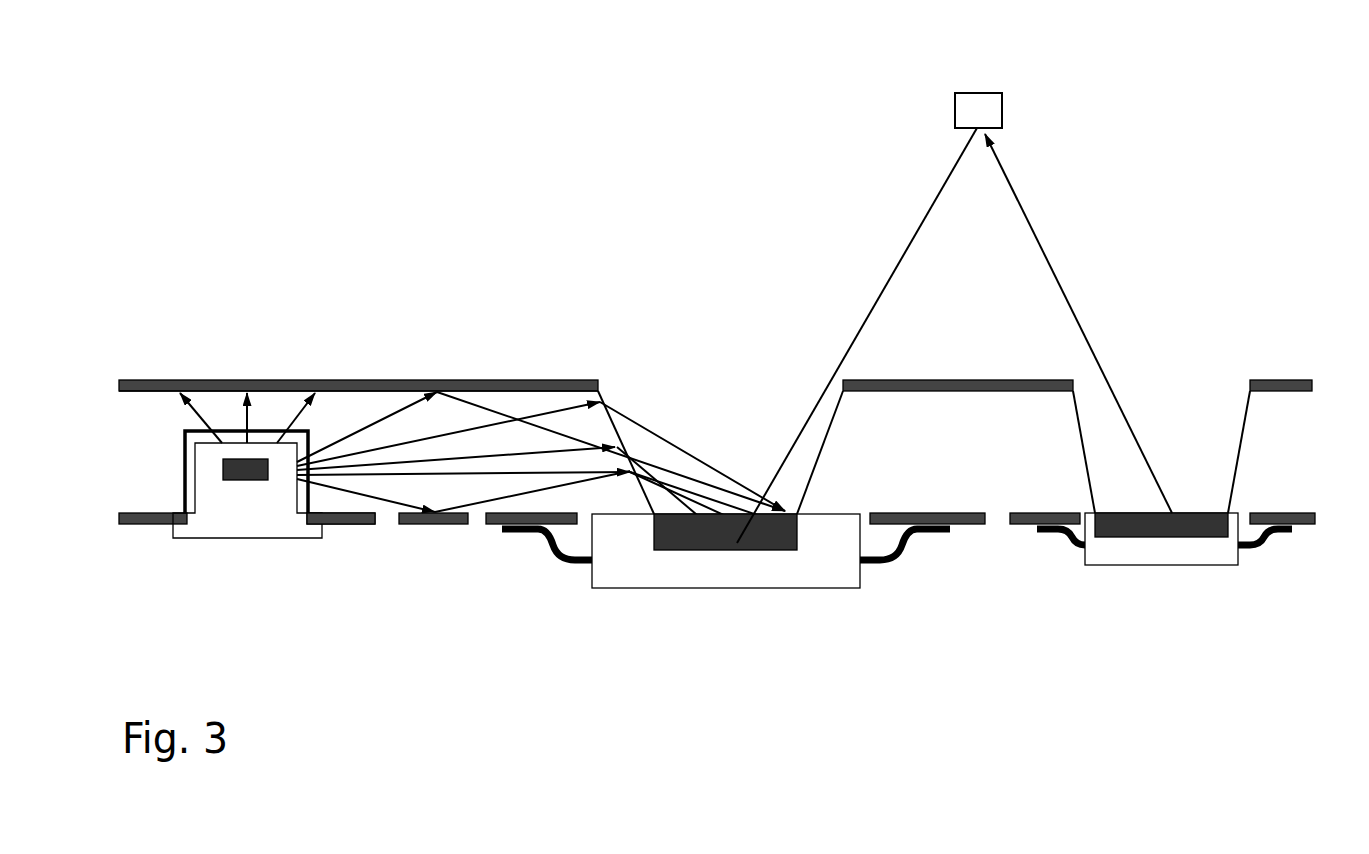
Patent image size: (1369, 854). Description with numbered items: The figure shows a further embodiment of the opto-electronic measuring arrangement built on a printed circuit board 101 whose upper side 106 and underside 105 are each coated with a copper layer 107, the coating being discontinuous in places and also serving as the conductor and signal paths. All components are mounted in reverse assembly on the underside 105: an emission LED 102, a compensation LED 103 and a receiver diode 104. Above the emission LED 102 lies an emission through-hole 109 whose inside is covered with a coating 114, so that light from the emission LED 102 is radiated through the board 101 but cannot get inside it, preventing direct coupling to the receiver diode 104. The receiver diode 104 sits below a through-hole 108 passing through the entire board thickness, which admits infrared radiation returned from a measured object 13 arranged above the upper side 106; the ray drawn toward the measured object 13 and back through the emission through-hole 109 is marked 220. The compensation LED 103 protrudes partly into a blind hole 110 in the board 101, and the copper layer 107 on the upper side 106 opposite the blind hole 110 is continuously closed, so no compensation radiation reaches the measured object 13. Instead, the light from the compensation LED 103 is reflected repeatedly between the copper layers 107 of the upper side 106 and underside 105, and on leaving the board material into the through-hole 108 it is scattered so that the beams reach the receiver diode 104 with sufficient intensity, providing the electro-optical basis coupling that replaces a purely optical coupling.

The measured object 13 is at (869, 318).
The printed circuit board 101 is at (158, 470).
The emission LED 102 is at (1150, 550).
The compensation LED 103 is at (245, 542).
The receiver diode 104 is at (736, 570).
The underside 105 is at (387, 527).
The upper side 106 is at (550, 392).
The copper layer 107 is at (237, 380).
The through-hole 108 is at (730, 393).
The emission through-hole 109 is at (1150, 385).
The blind hole 110 is at (268, 432).
The coating 114 is at (1077, 421).
The light path to detector 220 is at (1036, 195).